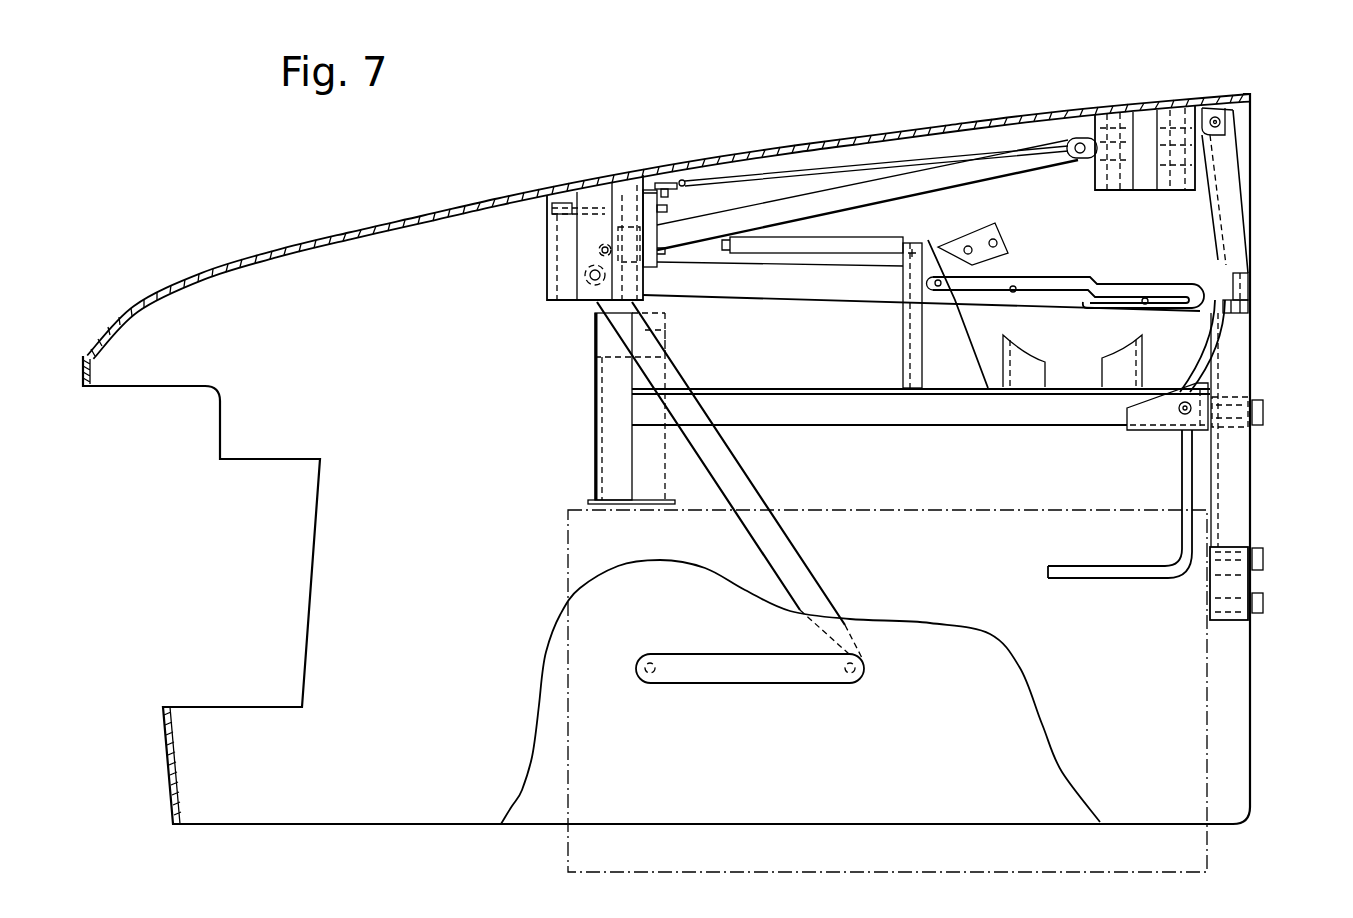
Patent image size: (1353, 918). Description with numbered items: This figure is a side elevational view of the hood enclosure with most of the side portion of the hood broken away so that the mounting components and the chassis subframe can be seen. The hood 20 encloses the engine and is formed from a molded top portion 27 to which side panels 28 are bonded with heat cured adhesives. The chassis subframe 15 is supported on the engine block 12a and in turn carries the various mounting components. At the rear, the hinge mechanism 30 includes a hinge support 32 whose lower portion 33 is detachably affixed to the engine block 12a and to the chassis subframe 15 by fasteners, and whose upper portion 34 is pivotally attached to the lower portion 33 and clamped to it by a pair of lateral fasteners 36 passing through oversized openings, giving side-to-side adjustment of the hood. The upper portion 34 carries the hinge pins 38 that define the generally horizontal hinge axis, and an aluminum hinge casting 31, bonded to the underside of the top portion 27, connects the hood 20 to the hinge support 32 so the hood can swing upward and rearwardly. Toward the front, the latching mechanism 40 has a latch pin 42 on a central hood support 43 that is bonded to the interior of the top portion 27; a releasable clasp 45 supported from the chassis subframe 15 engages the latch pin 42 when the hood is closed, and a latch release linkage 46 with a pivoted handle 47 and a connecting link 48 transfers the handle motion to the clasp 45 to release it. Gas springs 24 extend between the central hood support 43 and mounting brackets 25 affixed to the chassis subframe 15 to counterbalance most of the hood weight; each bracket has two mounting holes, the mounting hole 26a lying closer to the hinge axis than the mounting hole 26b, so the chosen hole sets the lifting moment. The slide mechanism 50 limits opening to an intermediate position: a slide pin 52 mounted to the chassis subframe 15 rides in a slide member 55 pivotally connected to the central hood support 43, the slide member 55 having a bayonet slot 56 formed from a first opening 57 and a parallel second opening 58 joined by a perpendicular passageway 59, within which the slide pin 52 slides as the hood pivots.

The engine block 12a is at (1210, 683).
The chassis subframe 15 is at (592, 440).
The hood 20 is at (1234, 82).
The gas springs 24 is at (810, 243).
The mounting brackets 25 is at (952, 238).
The mounting hole 26a is at (1008, 243).
The mounting hole 26b is at (970, 243).
The top portion 27 is at (297, 247).
The side panels 28 is at (1010, 718).
The hinge mechanism 30 is at (1272, 160).
The hinge casting 31 is at (1133, 192).
The hinge support 32 is at (1238, 328).
The lower portion 33 is at (1238, 443).
The upper portion 34 is at (1230, 180).
The lateral fasteners 36 is at (1250, 307).
The hinge pins 38 is at (1233, 117).
The latching mechanism 40 is at (648, 100).
The latch pin 42 is at (670, 210).
The central hood support 43 is at (547, 290).
The releasable clasp 45 is at (656, 190).
The latch release linkage 46 is at (1202, 360).
The pivoted handle 47 is at (1118, 572).
The connecting link 48 is at (822, 170).
The slide mechanism 50 is at (853, 325).
The slide pin 52 is at (958, 314).
The slide member 55 is at (719, 297).
The bayonet slot 56 is at (1090, 278).
The first opening 57 is at (1013, 292).
The second opening 58 is at (1146, 304).
The passageway 59 is at (1086, 306).